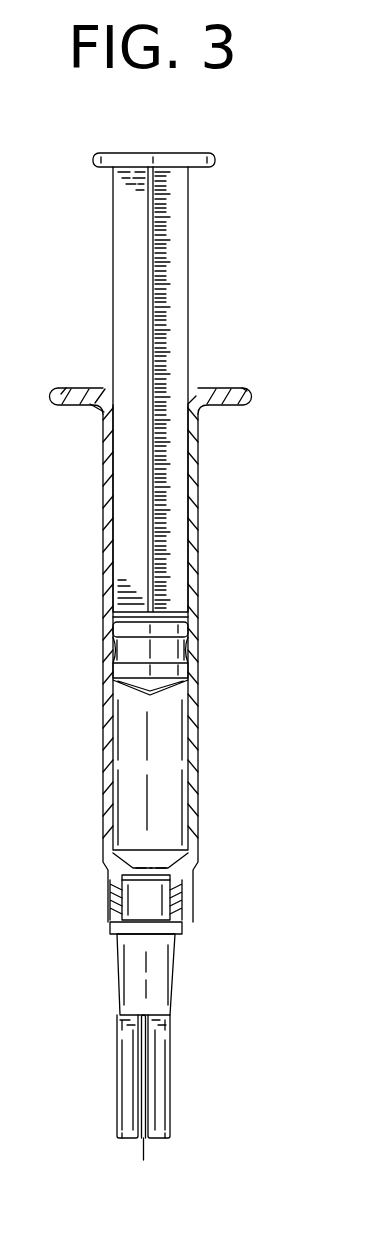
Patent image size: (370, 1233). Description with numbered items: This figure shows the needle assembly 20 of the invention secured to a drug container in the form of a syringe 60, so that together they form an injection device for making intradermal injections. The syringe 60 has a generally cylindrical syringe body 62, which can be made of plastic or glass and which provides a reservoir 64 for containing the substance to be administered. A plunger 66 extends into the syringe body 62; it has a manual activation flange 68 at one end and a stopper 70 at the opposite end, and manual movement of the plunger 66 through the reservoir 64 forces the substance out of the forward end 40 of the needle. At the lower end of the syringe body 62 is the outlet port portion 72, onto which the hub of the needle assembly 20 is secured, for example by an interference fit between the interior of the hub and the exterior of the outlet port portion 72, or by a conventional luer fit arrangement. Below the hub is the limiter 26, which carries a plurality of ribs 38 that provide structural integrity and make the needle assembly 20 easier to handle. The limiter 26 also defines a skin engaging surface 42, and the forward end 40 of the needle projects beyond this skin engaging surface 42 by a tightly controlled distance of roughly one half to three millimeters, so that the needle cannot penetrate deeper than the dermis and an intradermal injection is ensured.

The needle assembly 20 is at (240, 952).
The limiter 26 is at (135, 987).
The ribs 38 is at (117, 1093).
The forward end or tip of the needle 40 is at (142, 1145).
The skin engaging surface 42 is at (130, 1138).
The syringe 60 is at (86, 508).
The syringe body 62 is at (193, 752).
The reservoir 64 is at (132, 807).
The plunger 66 is at (173, 537).
The manual activation flange 68 is at (183, 153).
The stopper 70 is at (128, 655).
The outlet port portion 72 is at (116, 912).